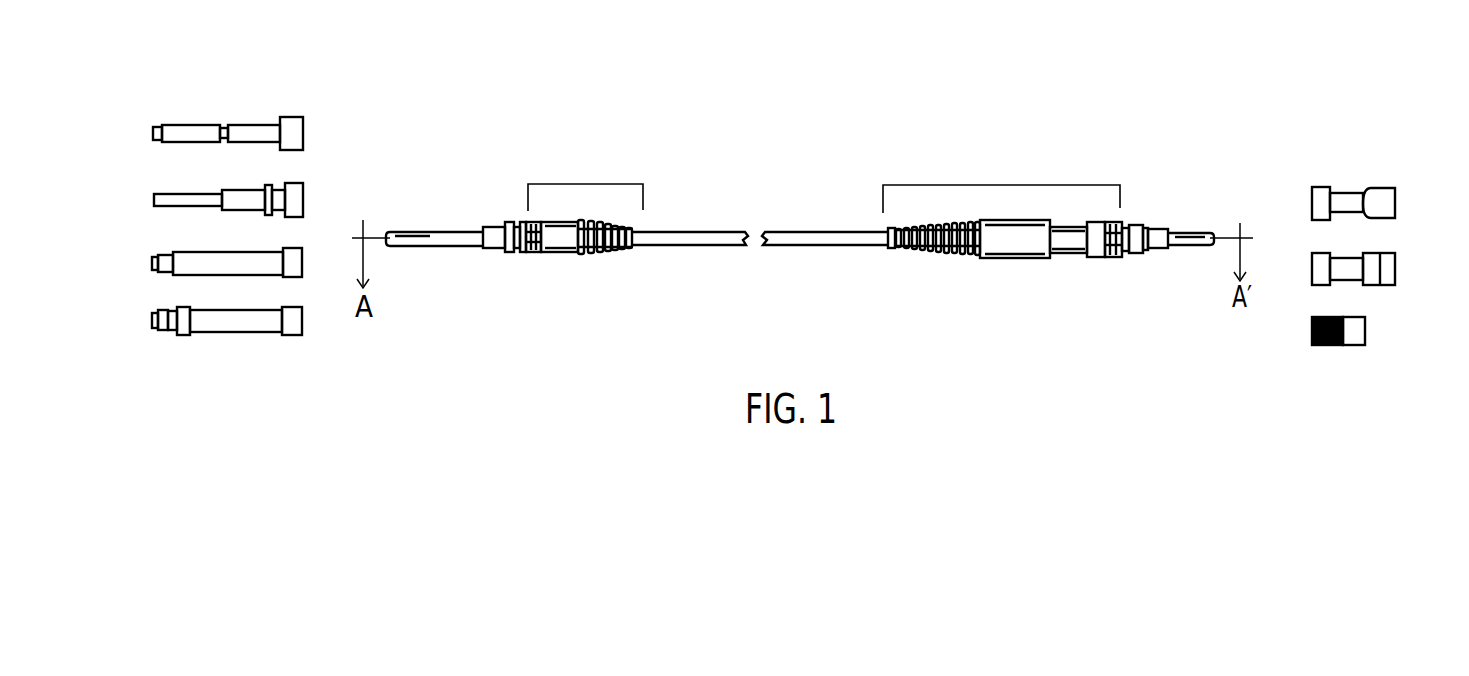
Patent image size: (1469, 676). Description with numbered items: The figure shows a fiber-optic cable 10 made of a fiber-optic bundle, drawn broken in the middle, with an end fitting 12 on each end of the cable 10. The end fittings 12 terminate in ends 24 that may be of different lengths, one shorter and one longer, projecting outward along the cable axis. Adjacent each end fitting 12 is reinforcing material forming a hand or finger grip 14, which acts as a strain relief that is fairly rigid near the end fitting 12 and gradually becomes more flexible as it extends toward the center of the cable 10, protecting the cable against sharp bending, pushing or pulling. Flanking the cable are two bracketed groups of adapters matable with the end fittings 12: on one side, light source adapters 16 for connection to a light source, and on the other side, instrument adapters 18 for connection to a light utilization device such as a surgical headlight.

The cable 10 is at (820, 231).
The end fitting 12 is at (508, 217).
The hand or finger grip 14 is at (587, 183).
The light source adapters 16 is at (145, 117).
The instrument adapters 18 is at (1395, 157).
The end 24 is at (401, 237).